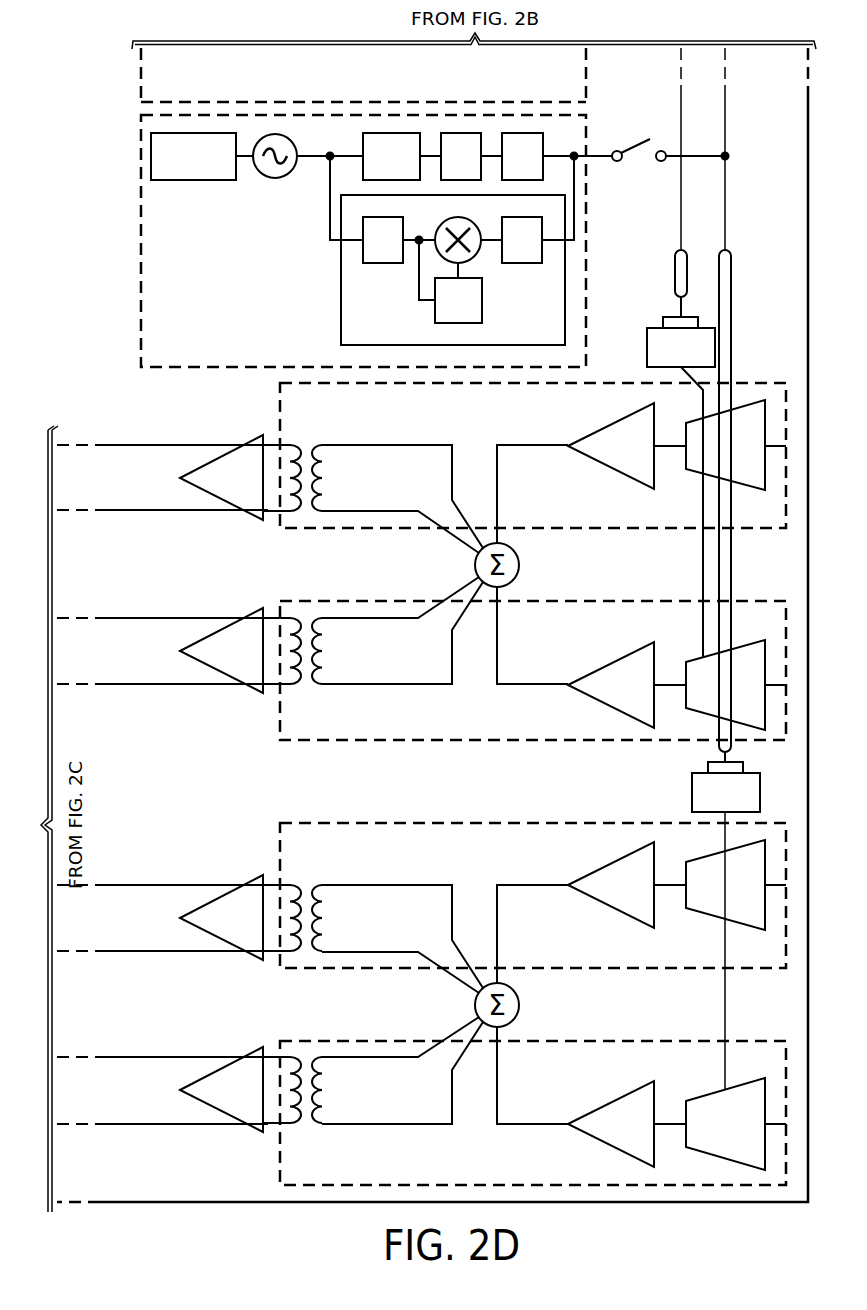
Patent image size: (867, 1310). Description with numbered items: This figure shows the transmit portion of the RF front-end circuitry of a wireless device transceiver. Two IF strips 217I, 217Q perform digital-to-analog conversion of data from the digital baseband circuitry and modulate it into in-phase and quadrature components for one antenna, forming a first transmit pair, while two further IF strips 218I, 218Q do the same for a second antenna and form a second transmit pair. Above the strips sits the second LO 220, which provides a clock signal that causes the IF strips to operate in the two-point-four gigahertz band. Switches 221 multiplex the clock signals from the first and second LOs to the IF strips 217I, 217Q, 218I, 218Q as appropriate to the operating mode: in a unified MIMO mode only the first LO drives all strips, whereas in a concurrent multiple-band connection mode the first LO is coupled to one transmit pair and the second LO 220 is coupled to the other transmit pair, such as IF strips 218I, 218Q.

The second LO 220 is at (226, 372).
The switches 221 is at (656, 214).
The IF strip 217I is at (409, 531).
The IF strip 217Q is at (410, 742).
The IF strip 218I is at (410, 970).
The IF strip 218Q is at (685, 1013).